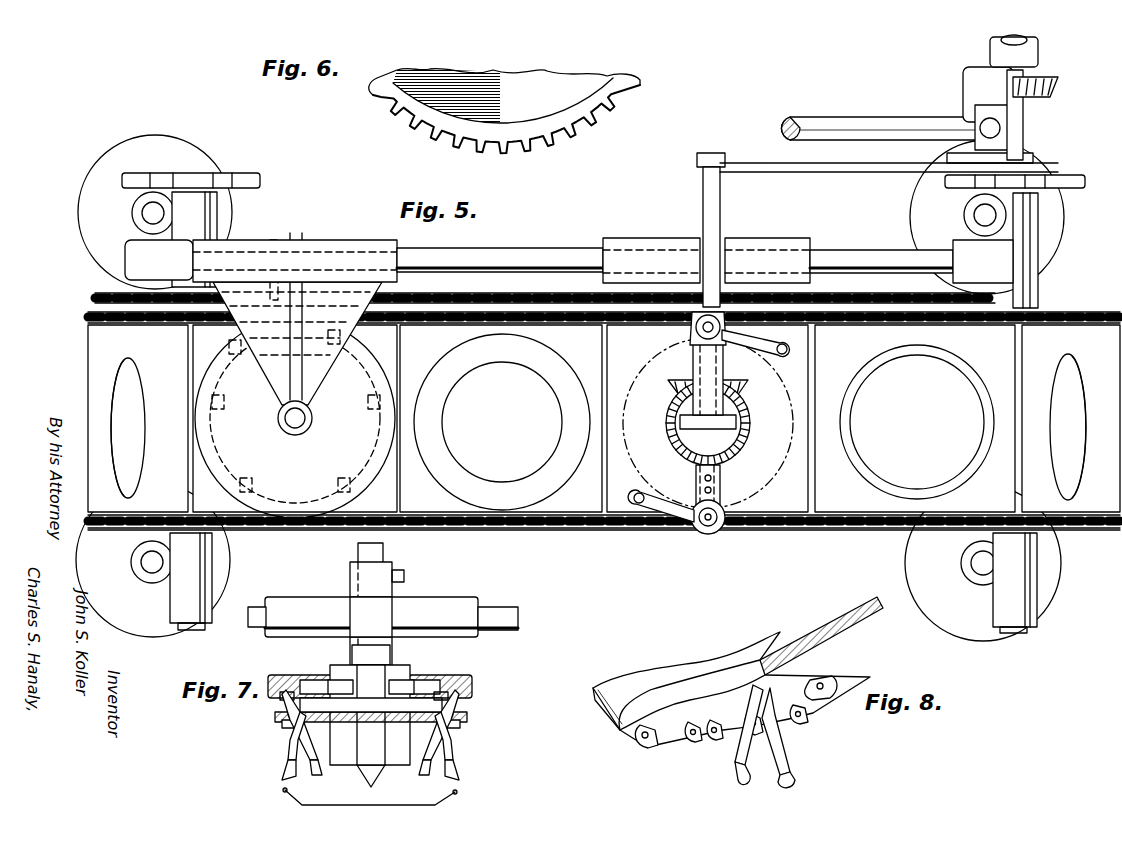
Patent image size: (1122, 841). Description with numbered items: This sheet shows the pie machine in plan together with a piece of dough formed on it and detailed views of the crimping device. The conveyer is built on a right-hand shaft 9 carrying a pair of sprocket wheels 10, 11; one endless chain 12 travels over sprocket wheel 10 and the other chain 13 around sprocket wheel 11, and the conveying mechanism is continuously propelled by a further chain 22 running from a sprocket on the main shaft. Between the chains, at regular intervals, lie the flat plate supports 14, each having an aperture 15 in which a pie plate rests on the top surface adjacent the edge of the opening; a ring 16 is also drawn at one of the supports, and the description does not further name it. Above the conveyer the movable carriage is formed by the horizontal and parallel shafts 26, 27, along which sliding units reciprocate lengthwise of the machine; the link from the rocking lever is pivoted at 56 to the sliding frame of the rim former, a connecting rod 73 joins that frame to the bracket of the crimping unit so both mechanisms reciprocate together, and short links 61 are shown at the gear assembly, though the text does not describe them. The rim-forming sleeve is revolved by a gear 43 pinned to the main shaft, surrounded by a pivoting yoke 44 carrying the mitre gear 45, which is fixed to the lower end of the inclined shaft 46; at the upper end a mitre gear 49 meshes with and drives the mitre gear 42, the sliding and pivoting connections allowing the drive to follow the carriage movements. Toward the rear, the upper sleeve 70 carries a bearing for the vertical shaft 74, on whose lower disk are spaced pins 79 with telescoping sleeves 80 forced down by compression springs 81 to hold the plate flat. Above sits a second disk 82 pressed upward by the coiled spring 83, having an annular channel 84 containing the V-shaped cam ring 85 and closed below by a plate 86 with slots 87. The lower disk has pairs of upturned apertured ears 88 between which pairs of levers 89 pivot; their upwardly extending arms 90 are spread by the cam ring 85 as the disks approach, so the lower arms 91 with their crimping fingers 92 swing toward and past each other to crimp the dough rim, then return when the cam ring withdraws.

In FIG. 5, the shaft 9 is at (1008, 634).
In FIG. 5, the sprocket wheel 10 is at (1078, 530).
In FIG. 5, the sprocket wheel 11 is at (1075, 312).
In FIG. 5, the endless chain 12 is at (418, 528).
In FIG. 5, the endless chain 13 is at (430, 323).
In FIG. 5, the plate support 14 is at (604, 418).
In FIG. 5, the aperture 15 is at (130, 365).
In FIG. 5, the ring 16 is at (550, 373).
In FIG. 7, the ring 16 is at (317, 804).
In FIG. 5, the chain 22 is at (492, 300).
In FIG. 5, the horizontal shaft 26 is at (875, 255).
In FIG. 7, the horizontal shaft 26 is at (503, 612).
In FIG. 5, the horizontal shaft 27 is at (822, 257).
In FIG. 5, the mitre gear 42 is at (682, 440).
In FIG. 5, the gear 43 is at (1052, 92).
In FIG. 5, the yoke 44 is at (988, 108).
In FIG. 5, the mitre gear 45 is at (1030, 130).
In FIG. 5, the inclined shaft 46 is at (862, 117).
In FIG. 5, the mitre gear 49 is at (748, 392).
In FIG. 5, the pivot 56 is at (710, 155).
In FIG. 5, the link 61 is at (783, 345).
In FIG. 5, the upper sleeve 70 is at (330, 240).
In FIG. 5, the connecting rod 73 is at (545, 266).
In FIG. 5, the vertical shaft 74 is at (307, 428).
In FIG. 7, the vertical shaft 74 is at (355, 552).
In FIG. 7, the pin 79 is at (465, 722).
In FIG. 7, the telescoping sleeve 80 is at (283, 772).
In FIG. 7, the compression spring 81 is at (282, 728).
In FIG. 7, the second disk 82 is at (400, 672).
In FIG. 7, the coiled spring 83 is at (420, 685).
In FIG. 7, the annular channel 84 is at (470, 690).
In FIG. 7, the V-shaped cam ring 85 is at (470, 676).
In FIG. 8, the V-shaped cam ring 85 is at (810, 633).
In FIG. 7, the plate 86 is at (470, 705).
In FIG. 7, the slot 87 is at (287, 714).
In FIG. 8, the upturned apertured ear 88 is at (693, 722).
In FIG. 8, the lever 89 is at (750, 712).
In FIG. 7, the upwardly extending arm 90 is at (455, 700).
In FIG. 8, the upwardly extending arm 90 is at (800, 682).
In FIG. 7, the lower arm 91 is at (287, 740).
In FIG. 8, the lower arm 91 is at (745, 750).
In FIG. 7, the crimping finger 92 is at (430, 770).
In FIG. 8, the crimping finger 92 is at (742, 778).